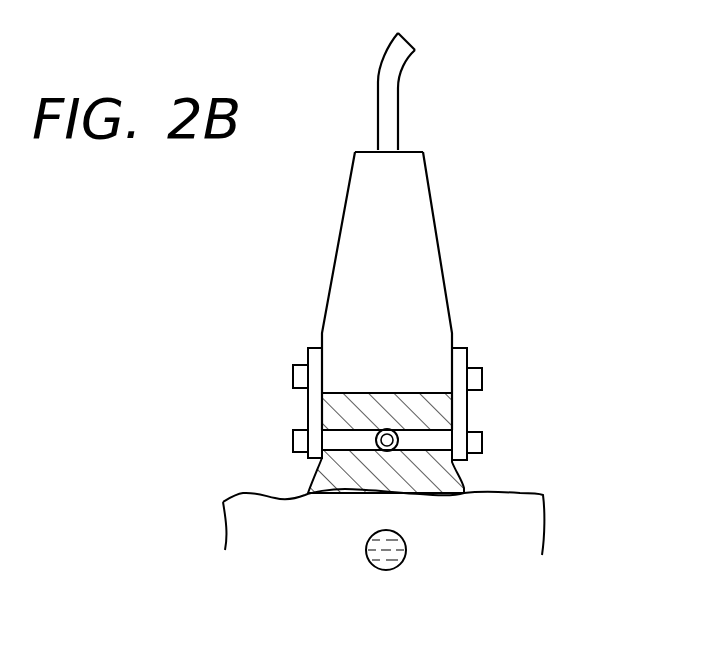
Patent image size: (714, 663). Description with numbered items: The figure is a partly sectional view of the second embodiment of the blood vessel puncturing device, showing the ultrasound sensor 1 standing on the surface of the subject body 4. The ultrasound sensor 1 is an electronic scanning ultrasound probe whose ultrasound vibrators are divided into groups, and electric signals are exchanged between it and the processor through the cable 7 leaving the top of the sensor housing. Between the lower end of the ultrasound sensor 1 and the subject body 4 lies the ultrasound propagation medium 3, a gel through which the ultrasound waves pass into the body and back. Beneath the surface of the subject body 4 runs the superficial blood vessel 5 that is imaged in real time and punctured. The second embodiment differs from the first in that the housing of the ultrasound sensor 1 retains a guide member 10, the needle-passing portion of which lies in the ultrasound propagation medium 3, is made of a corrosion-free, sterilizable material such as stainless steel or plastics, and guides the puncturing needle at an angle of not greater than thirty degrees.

The ultrasound sensor 1 is at (440, 260).
The ultrasound propagation medium 3 is at (317, 482).
The subject body 4 is at (528, 515).
The superficial blood vessel 5 is at (366, 553).
The cable 7 is at (389, 100).
The guide member 10 is at (398, 433).